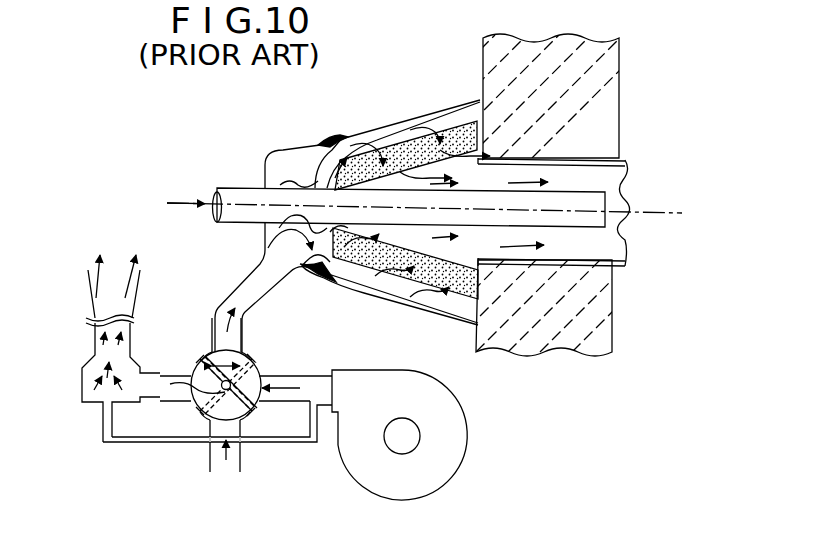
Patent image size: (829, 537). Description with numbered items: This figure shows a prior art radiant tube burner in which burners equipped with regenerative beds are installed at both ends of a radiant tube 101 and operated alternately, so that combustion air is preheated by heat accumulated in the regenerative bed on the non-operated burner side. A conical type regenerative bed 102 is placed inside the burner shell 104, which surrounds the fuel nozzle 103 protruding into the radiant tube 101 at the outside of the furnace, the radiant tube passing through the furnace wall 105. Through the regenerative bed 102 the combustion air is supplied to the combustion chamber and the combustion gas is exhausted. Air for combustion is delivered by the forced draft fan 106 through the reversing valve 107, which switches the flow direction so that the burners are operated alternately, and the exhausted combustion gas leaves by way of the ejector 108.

The radiant tube 101 is at (600, 163).
The conical type regenerative bed 102 is at (392, 144).
The fuel nozzle 103 is at (588, 222).
The burner shell 104 is at (352, 137).
The furnace wall 105 is at (605, 64).
The forced draft fan 106 is at (453, 442).
The reversing valve 107 is at (252, 370).
The ejector 108 is at (82, 388).